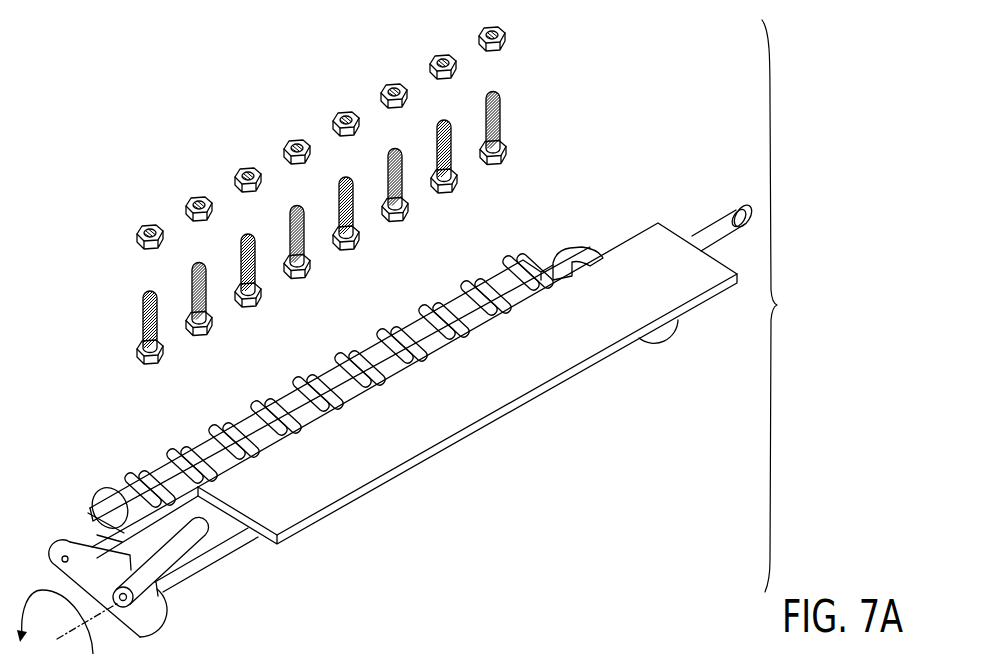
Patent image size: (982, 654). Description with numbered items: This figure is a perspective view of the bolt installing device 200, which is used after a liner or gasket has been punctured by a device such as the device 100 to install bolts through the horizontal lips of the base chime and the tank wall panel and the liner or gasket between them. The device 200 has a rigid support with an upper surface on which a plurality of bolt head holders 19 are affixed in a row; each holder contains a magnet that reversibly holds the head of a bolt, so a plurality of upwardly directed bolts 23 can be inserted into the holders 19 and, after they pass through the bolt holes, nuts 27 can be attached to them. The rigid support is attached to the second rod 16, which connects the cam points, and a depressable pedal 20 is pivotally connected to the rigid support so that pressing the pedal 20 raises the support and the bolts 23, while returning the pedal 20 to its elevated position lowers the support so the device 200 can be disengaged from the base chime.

The second rod 16 is at (90, 533).
The bolt head holders 19 is at (277, 402).
The depressable pedal 20 is at (481, 403).
The bolts 23 is at (567, 103).
The nuts 27 is at (165, 201).
The device 100 is at (645, 653).
The device 200 is at (800, 306).